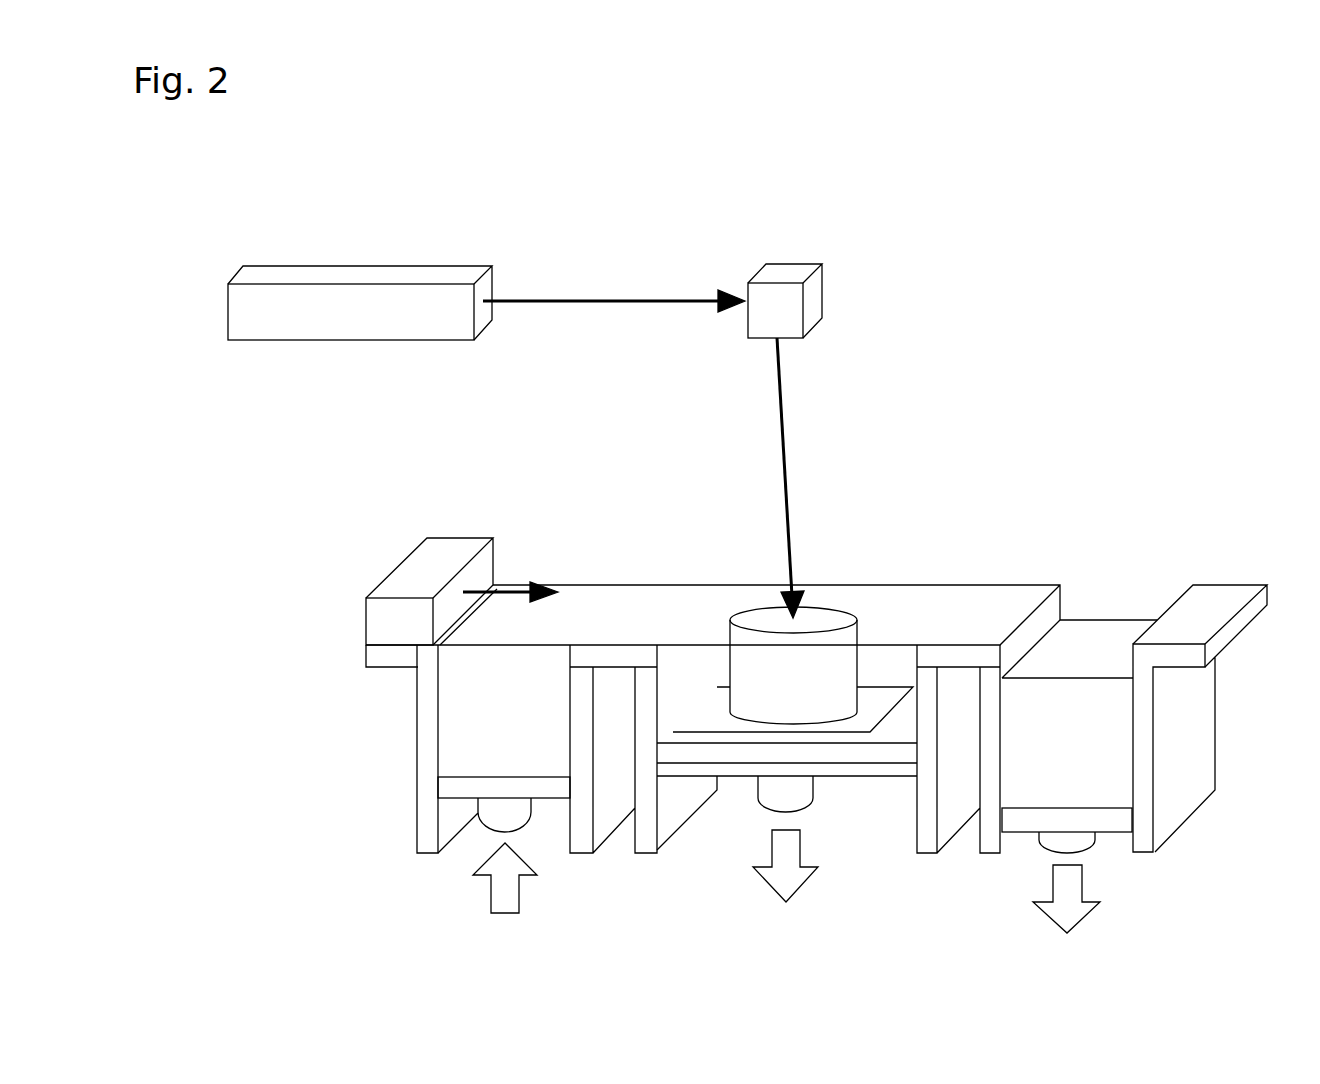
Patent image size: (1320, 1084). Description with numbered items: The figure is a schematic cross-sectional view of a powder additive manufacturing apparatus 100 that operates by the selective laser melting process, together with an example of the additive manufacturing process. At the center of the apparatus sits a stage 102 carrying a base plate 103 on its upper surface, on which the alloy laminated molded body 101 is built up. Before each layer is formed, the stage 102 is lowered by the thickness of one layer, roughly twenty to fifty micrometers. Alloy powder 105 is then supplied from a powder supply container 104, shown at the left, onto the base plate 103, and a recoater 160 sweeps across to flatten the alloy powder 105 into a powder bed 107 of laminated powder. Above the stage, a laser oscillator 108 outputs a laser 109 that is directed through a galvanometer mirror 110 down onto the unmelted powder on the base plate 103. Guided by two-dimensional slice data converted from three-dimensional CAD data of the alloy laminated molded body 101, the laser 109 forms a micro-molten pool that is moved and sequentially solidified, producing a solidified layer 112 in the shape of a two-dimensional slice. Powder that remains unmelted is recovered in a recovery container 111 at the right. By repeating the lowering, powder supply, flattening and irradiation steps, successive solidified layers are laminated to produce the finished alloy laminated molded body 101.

The powder additive manufacturing apparatus 100 is at (228, 163).
The alloy laminated molded body 101 is at (837, 660).
The stage 102 is at (748, 752).
The base plate 103 is at (820, 735).
The powder supply container 104 is at (417, 713).
The alloy powder 105 is at (463, 738).
The powder bed 107 is at (651, 604).
The laser oscillator 108 is at (438, 273).
The laser 109 is at (784, 414).
The galvanometer mirror 110 is at (793, 272).
The recovery container 111 is at (1088, 748).
The solidified layer 112 is at (820, 606).
The recoater 160 is at (447, 546).